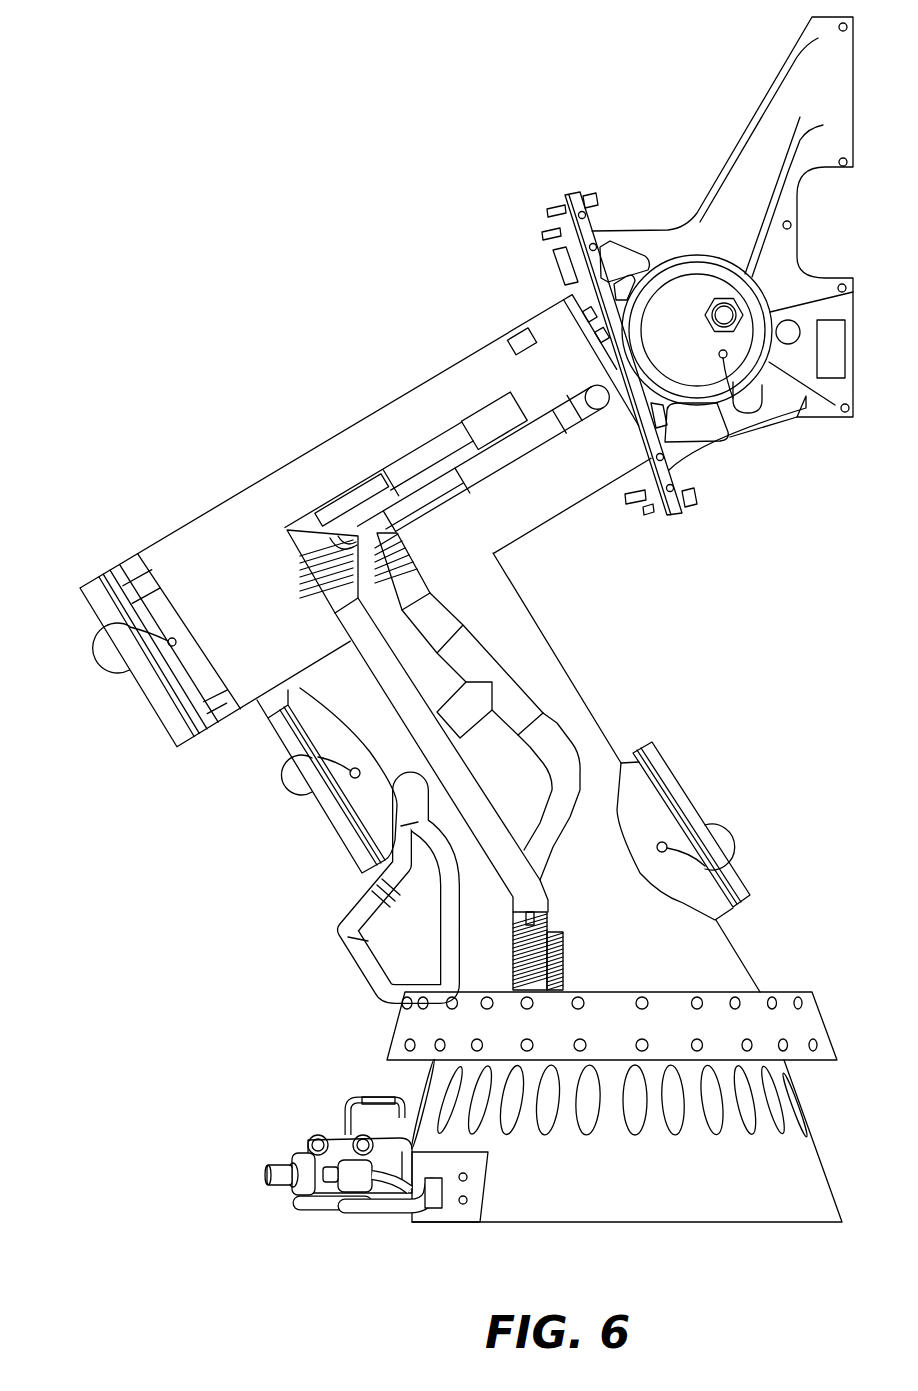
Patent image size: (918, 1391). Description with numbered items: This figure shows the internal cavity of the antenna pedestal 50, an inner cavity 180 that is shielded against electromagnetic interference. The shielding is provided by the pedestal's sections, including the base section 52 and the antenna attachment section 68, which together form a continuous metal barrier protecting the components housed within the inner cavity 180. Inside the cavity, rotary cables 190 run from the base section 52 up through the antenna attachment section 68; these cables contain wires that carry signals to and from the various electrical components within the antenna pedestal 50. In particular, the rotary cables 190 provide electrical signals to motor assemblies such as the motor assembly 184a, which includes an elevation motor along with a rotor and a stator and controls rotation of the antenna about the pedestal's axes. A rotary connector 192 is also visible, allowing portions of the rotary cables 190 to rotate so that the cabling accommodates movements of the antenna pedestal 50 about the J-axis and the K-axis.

The antenna pedestal 50 is at (283, 198).
The base section 52 is at (778, 1222).
The antenna attachment section 68 is at (688, 213).
The inner cavity 180 is at (305, 473).
The motor assembly 184a is at (217, 713).
The rotary cables 190 is at (310, 582).
The rotary connector 192 is at (570, 410).